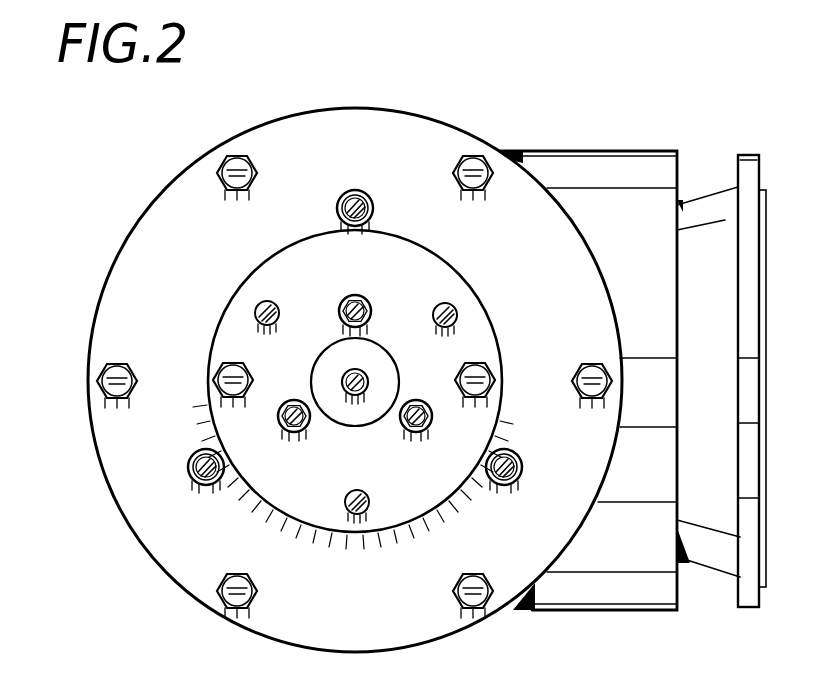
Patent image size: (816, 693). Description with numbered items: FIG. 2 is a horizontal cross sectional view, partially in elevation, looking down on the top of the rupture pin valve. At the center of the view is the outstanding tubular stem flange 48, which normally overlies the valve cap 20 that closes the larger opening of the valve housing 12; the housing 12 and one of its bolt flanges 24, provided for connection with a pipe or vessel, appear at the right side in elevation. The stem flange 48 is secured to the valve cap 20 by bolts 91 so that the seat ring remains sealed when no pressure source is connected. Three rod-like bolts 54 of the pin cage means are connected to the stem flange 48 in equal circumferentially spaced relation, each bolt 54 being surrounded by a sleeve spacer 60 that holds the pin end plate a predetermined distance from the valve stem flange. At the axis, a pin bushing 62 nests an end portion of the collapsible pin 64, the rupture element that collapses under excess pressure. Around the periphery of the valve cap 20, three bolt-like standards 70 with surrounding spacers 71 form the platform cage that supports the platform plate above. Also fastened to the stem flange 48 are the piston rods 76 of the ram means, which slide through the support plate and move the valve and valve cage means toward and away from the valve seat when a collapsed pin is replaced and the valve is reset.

The valve housing 12 is at (586, 140).
The valve cap 20 is at (319, 100).
The bolt flange 24 is at (745, 153).
The tubular stem flange 48 is at (430, 250).
The bolt 54 is at (352, 298).
The sleeve spacer 60 is at (340, 318).
The pin bushing 62 is at (370, 378).
The collapsible pin 64 is at (366, 371).
The bolt-like standard 70 is at (373, 200).
The spacer 71 is at (338, 200).
The piston rod 76 is at (443, 302).
The bolt 91 is at (212, 382).